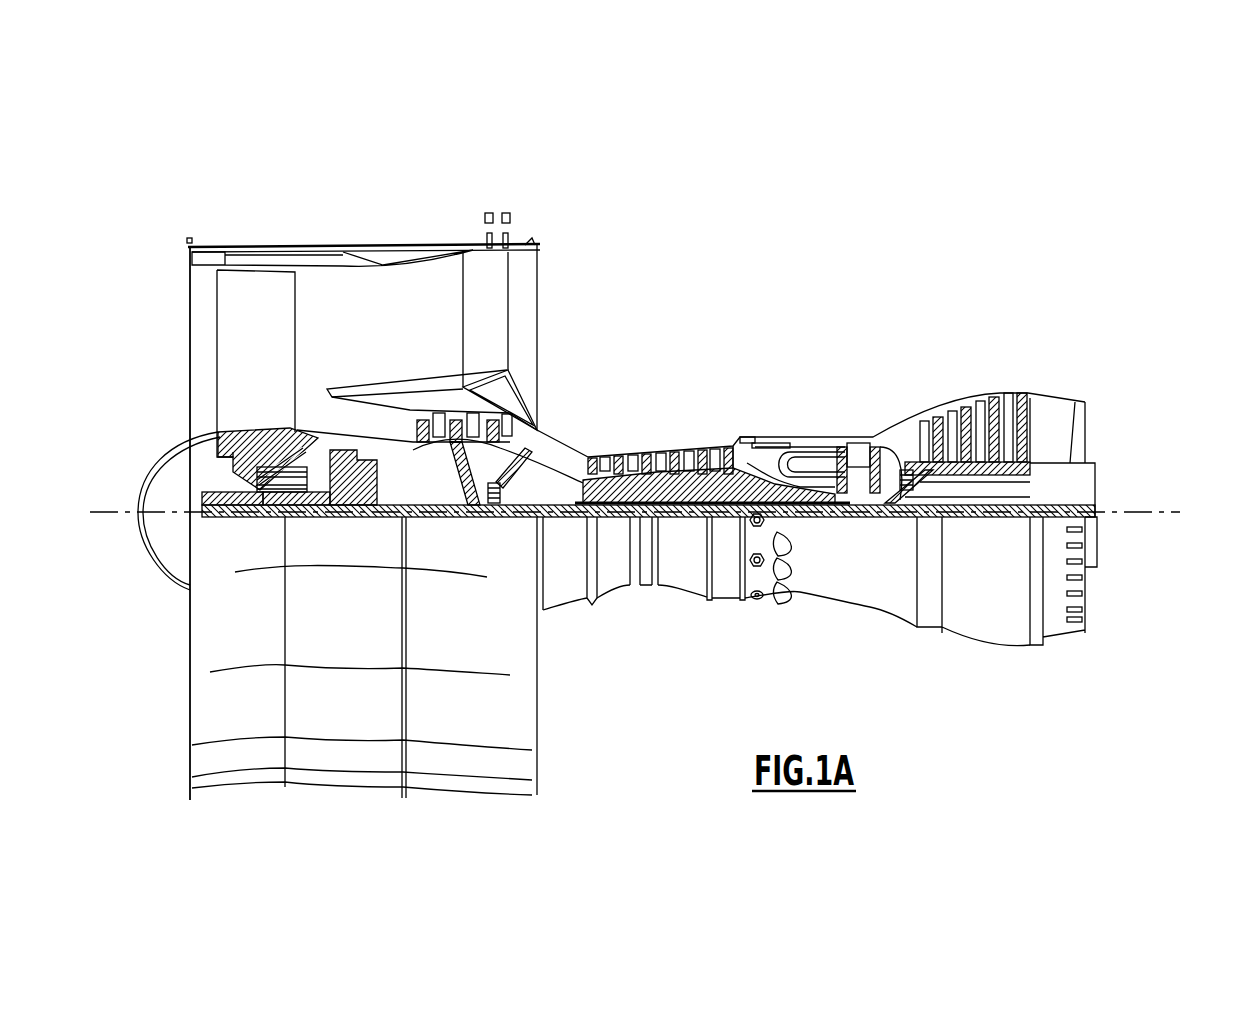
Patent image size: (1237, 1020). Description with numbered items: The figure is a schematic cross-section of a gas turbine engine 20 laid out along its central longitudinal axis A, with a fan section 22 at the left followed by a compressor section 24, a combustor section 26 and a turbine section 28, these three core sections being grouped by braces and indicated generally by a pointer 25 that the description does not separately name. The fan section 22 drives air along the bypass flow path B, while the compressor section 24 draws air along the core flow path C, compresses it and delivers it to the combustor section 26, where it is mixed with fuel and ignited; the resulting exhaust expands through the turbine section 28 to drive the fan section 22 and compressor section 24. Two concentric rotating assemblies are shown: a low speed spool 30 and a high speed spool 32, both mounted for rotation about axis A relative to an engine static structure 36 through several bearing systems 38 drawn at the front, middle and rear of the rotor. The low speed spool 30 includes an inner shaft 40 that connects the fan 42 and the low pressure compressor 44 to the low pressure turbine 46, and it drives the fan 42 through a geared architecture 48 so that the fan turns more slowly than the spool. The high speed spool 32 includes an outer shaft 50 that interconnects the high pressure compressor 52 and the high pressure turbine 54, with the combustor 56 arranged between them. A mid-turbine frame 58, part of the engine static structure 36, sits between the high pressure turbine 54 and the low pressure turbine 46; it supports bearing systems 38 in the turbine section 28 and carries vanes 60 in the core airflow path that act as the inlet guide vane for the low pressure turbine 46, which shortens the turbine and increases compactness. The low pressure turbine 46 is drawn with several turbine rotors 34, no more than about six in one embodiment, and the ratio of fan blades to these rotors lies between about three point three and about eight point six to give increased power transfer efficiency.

The gas turbine engine 20 is at (752, 140).
The fan section 22 is at (388, 221).
The compressor section 24 is at (401, 357).
The engine core 25 is at (803, 280).
The combustor section 26 is at (825, 357).
The turbine section 28 is at (1045, 357).
The low speed spool 30 is at (685, 530).
The high speed spool 32 is at (727, 468).
The turbine rotors 34 is at (990, 507).
The engine static structure 36 is at (723, 605).
The bearing systems 38 is at (266, 513).
The inner shaft 40 is at (553, 527).
The fan 42 is at (269, 369).
The low pressure compressor section 44 is at (470, 422).
The low pressure turbine section 46 is at (978, 410).
The geared architecture 48 is at (364, 497).
The outer shaft 50 is at (806, 512).
The high pressure compressor section 52 is at (664, 485).
The high pressure turbine section 54 is at (853, 453).
The combustor 56 is at (798, 460).
The mid-turbine frame 58 is at (893, 427).
The vanes 60 is at (930, 513).